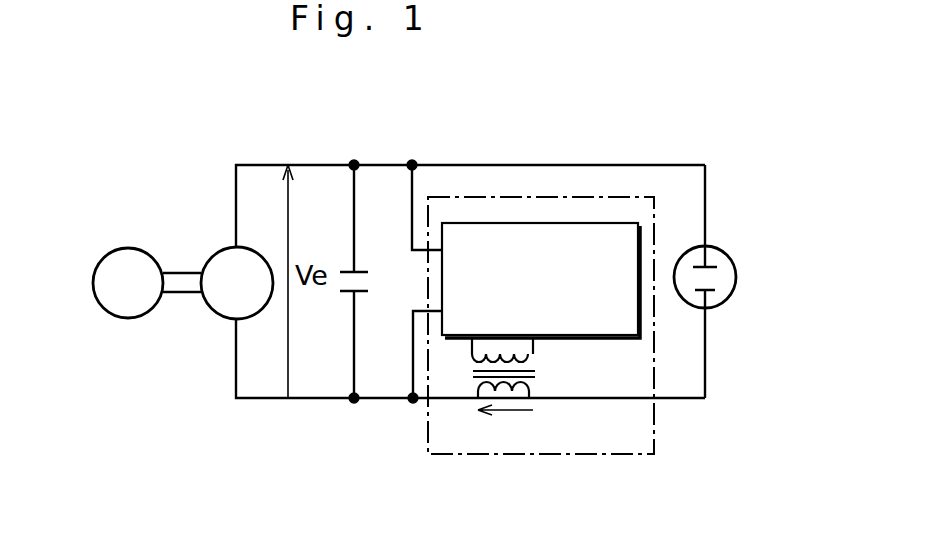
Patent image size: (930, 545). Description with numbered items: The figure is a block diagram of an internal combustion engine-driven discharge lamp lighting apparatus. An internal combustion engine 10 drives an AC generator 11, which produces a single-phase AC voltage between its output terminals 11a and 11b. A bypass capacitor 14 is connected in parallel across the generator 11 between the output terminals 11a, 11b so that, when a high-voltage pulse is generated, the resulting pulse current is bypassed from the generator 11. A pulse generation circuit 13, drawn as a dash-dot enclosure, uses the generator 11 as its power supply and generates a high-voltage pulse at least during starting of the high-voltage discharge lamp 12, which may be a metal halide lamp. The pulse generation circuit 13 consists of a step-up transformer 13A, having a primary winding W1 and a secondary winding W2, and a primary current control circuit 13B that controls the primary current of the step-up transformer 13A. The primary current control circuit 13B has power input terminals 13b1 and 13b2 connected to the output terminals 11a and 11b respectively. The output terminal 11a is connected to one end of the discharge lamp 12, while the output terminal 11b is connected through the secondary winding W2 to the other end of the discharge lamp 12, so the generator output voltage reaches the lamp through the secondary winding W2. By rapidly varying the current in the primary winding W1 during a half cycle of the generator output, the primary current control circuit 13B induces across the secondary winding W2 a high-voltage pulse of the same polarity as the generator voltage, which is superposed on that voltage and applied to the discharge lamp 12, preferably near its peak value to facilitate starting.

The internal combustion engine 10 is at (143, 251).
The AC generator 11 is at (220, 252).
The output terminal 11a is at (236, 180).
The output terminal 11b is at (236, 349).
The high-voltage discharge lamp 12 is at (728, 254).
The pulse generation circuit 13 is at (541, 192).
The step-up transformer 13A is at (619, 392).
The primary current control circuit 13B is at (640, 237).
The power input terminal 13b1 is at (413, 188).
The power input terminal 13b2 is at (413, 365).
The bypass capacitor 14 is at (372, 278).
The primary winding W1 is at (513, 343).
The secondary winding W2 is at (513, 398).